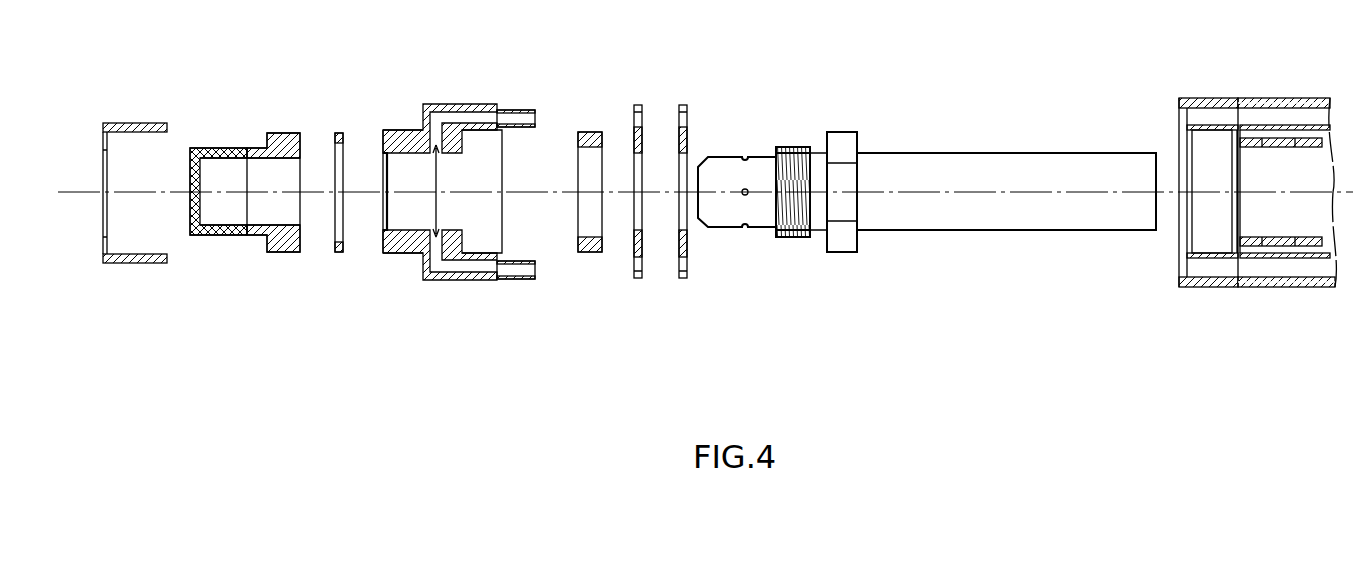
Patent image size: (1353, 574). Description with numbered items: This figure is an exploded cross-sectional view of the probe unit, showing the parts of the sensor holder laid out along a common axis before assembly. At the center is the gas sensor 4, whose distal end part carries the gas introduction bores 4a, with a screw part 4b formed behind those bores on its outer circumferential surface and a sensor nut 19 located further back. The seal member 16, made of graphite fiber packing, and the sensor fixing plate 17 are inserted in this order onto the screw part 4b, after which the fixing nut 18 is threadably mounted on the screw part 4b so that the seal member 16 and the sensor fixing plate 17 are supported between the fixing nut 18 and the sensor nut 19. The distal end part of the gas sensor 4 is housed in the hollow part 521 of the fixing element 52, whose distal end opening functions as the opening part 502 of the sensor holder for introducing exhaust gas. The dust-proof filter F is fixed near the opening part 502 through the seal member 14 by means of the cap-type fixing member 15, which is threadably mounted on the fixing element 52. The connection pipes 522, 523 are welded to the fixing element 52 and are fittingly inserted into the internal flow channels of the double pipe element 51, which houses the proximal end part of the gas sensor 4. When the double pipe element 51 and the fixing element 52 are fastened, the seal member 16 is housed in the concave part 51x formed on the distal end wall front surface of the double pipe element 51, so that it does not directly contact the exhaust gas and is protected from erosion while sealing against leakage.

The fixing member 15 is at (133, 122).
The filter F is at (234, 237).
The seal member 14 is at (338, 253).
The opening part 502 is at (383, 163).
The fixing element 52 is at (445, 188).
The hollow part 521 is at (410, 235).
The connection pipe 522 is at (522, 281).
The connection pipe 523 is at (523, 110).
The fixing nut 18 is at (590, 130).
The sensor fixing plate 17 is at (637, 279).
The seal member 16 is at (683, 279).
The gas sensor 4 is at (927, 188).
The gas introduction bores 4a is at (742, 223).
The screw part 4b is at (797, 147).
The sensor nut 19 is at (845, 132).
The double pipe element 51 is at (1214, 159).
The concave part 51x is at (1185, 277).